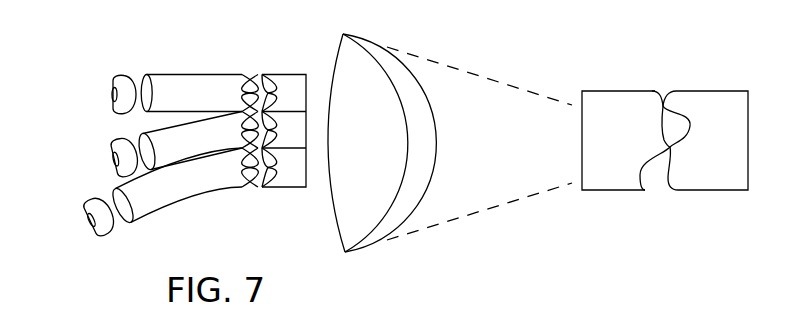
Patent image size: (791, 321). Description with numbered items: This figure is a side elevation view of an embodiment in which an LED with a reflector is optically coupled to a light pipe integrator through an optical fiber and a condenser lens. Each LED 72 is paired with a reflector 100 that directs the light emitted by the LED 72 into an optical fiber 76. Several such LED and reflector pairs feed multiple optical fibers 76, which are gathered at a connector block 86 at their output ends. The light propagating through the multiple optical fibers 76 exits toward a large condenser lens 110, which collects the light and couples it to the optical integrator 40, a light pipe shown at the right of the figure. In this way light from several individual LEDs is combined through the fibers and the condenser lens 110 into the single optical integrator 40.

The LED 72 is at (112, 96).
The reflector 100 is at (112, 112).
The optical fiber 76 is at (223, 97).
The fiber connector block 86 is at (290, 58).
The condenser lens 110 is at (418, 88).
The optical integrator 40 is at (644, 91).